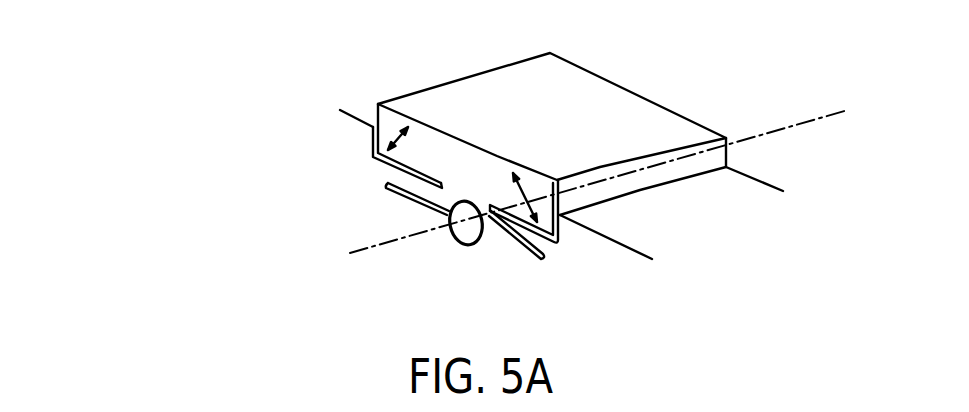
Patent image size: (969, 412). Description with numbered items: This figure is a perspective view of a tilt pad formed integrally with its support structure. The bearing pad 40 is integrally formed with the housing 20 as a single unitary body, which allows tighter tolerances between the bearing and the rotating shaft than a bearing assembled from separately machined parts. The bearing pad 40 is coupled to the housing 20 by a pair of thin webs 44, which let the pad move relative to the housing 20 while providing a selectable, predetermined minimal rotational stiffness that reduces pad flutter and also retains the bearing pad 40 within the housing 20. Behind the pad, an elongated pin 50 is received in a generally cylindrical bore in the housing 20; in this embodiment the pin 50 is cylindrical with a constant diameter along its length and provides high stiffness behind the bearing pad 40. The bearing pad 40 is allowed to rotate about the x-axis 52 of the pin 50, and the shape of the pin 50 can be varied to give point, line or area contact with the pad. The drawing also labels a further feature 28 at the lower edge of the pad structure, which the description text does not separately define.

The bearing pad 40 is at (593, 73).
The housing 20 is at (757, 186).
The x-axis 52 is at (813, 119).
The flange 28 is at (558, 245).
The webs 44 is at (500, 232).
The pin 50 is at (452, 238).